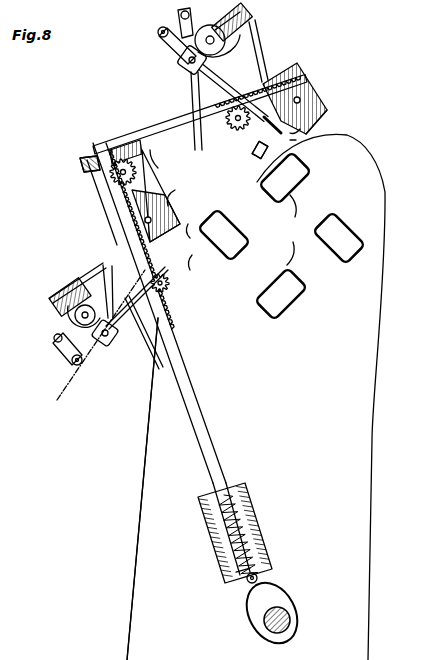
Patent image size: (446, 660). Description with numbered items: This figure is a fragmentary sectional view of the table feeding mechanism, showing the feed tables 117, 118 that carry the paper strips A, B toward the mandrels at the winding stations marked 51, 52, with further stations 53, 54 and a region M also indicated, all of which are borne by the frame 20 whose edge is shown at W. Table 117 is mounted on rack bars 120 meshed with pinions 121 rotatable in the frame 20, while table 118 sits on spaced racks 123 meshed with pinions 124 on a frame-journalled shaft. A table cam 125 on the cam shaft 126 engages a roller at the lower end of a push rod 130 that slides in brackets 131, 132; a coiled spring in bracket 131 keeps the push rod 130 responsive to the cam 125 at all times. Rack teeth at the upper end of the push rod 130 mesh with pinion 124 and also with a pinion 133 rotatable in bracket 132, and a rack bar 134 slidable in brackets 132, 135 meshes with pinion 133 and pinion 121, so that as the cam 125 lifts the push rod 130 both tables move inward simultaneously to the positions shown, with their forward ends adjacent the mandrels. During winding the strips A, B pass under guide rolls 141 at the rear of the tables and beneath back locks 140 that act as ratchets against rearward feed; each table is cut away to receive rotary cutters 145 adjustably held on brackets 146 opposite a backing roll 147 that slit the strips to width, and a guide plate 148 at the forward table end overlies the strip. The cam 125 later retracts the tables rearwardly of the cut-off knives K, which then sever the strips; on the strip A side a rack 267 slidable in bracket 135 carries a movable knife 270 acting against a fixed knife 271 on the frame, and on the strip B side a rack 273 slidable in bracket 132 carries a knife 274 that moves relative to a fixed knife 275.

The frame 20 is at (148, 495).
The web edge W is at (152, 448).
The switch station 1 51 is at (285, 178).
The switch station 2 52 is at (224, 235).
The switch station 3 53 is at (281, 294).
The switch station 4 54 is at (339, 238).
The switch group M is at (316, 229).
The feed table 117 is at (182, 66).
The feed table 118 is at (84, 329).
The rack bar 120 is at (258, 150).
The pinion 121 is at (236, 128).
The rack 123 is at (170, 282).
The pinion 124 is at (168, 300).
The table cam 125 is at (283, 608).
The cam shaft 126 is at (292, 624).
The push rod 130 is at (216, 458).
The bracket 131 is at (258, 523).
The bracket 132 is at (103, 203).
The pinion 133 is at (112, 177).
The rack bar 134 is at (143, 142).
The bracket 135 is at (302, 84).
The back lock 140 is at (180, 13).
The guide roll 141 is at (162, 33).
The rotary cutter 145 is at (237, 48).
The bracket 146 is at (240, 23).
The backing roll 147 is at (192, 84).
The guide plate 148 is at (296, 140).
The rack 267 is at (312, 97).
The knife 270 is at (262, 159).
The fixed knife 271 is at (318, 120).
The rack 273 is at (165, 159).
The knife 274 is at (192, 255).
The fixed knife 275 is at (185, 194).
The strip A is at (136, 61).
The strip B is at (55, 398).
The cut-off knife K is at (300, 129).